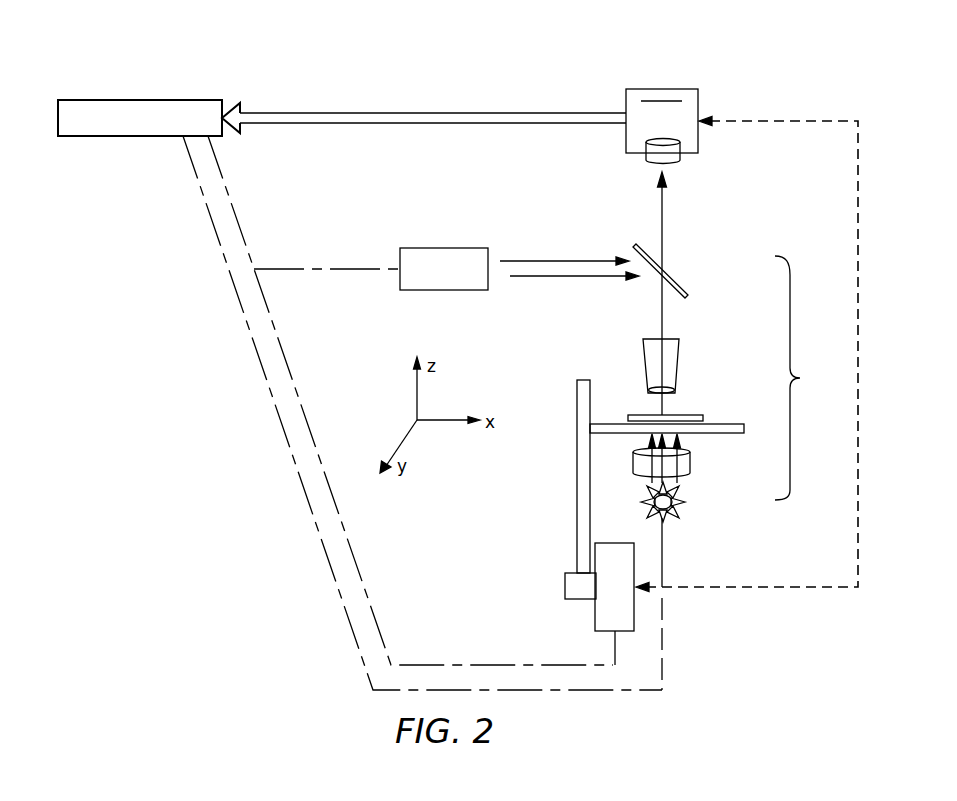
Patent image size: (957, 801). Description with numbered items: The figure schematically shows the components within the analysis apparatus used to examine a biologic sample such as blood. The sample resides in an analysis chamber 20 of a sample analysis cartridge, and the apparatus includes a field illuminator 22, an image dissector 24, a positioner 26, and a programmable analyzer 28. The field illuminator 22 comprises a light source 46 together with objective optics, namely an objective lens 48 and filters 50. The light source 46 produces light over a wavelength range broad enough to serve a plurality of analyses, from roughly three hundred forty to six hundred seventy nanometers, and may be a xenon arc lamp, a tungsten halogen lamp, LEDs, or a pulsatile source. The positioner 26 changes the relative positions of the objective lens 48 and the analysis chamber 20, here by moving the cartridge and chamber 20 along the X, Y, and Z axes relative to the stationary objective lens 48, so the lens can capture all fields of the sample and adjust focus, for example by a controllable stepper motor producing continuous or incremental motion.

The analysis chamber 20 is at (690, 415).
The field illuminator 22 is at (704, 414).
The image dissector 24 is at (672, 89).
The positioner 26 is at (565, 578).
The programmable analyzer 28 is at (131, 137).
The light source 46 is at (438, 260).
The objective lens 48 is at (643, 360).
The filters 50 is at (677, 283).